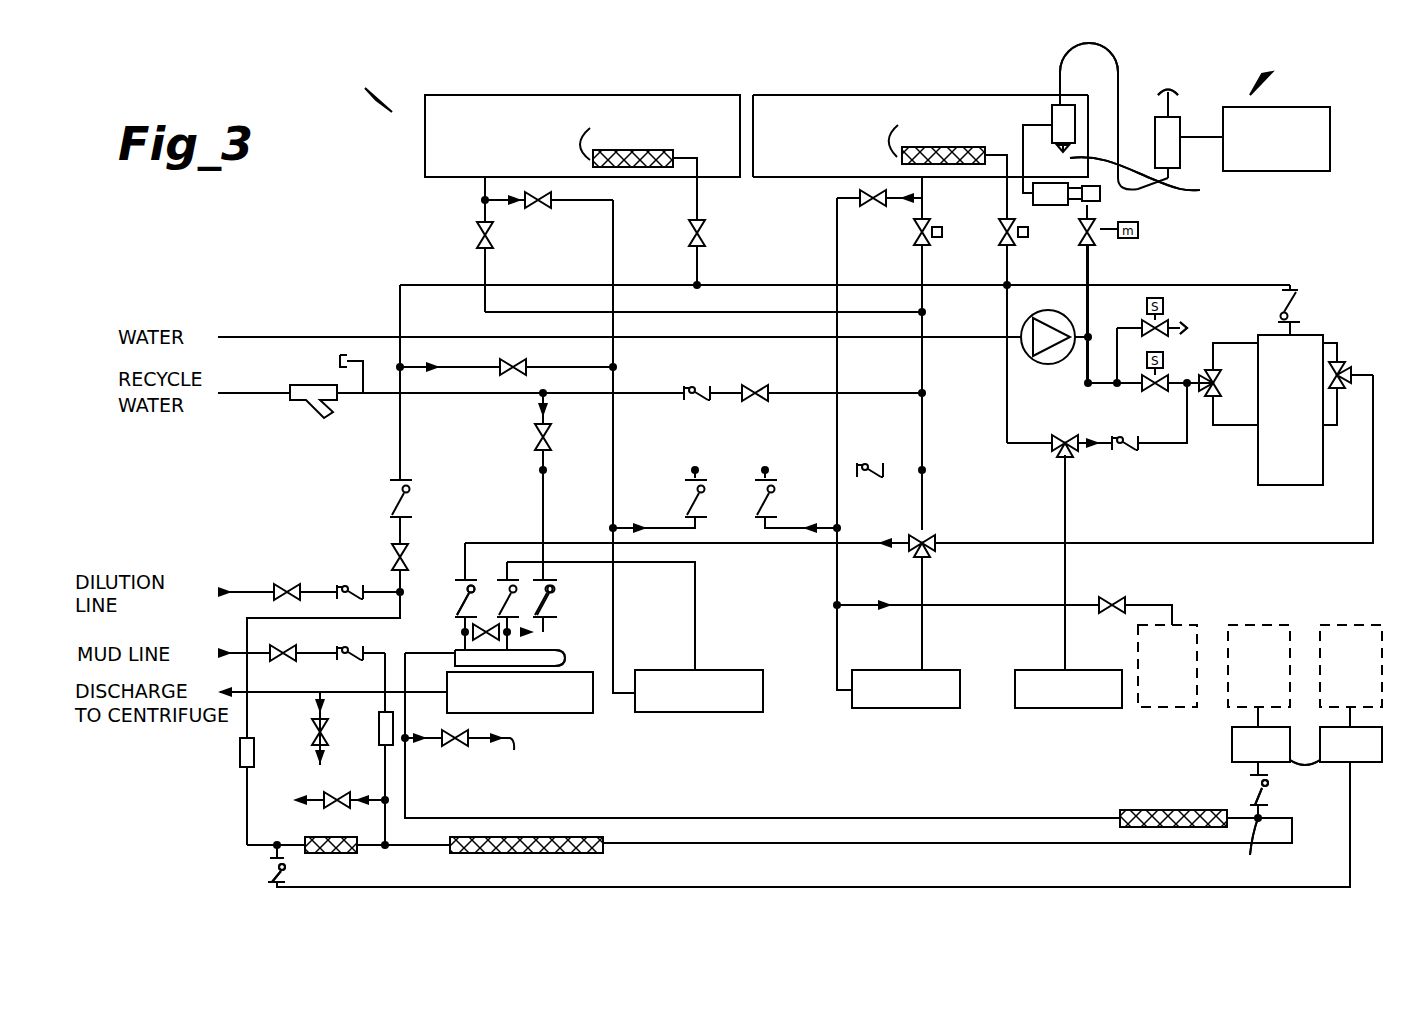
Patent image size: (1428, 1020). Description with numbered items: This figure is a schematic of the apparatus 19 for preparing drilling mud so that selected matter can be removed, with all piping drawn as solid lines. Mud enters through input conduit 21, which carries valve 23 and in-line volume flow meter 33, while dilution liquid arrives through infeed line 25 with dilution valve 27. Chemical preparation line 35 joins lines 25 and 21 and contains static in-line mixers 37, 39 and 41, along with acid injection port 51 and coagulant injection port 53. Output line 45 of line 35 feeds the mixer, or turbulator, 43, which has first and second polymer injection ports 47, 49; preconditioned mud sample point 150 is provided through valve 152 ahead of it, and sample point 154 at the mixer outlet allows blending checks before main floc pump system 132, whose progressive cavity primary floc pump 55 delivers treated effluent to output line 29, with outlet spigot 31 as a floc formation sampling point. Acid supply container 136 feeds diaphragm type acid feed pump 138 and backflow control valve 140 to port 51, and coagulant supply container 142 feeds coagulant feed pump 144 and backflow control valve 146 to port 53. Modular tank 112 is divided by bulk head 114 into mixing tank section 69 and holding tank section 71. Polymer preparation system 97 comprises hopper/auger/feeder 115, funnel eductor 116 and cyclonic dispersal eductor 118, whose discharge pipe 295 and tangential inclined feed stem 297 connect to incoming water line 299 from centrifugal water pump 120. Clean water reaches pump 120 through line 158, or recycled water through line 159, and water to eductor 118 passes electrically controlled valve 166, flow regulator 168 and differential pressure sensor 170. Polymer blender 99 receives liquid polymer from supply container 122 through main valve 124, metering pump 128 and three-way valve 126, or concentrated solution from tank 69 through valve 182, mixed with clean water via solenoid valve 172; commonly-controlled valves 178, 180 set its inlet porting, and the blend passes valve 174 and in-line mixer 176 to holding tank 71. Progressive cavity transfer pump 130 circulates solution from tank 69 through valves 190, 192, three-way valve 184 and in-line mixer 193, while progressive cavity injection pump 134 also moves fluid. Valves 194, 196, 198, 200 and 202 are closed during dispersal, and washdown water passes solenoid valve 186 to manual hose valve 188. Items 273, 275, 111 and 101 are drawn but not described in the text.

The apparatus 19 is at (372, 95).
The holding tank section 71 is at (490, 84).
The bulk head 114 is at (748, 96).
The mixing tank section 69 is at (758, 100).
The modular tank 112 is at (886, 100).
The cyclonic dispersal eductor 118 is at (1058, 103).
The vent line 275 is at (1112, 72).
The funnel eductor 116 is at (1156, 130).
The vent 273 is at (1183, 125).
The polymer preparation system 97 is at (1265, 80).
The hopper/auger/feeder 115 is at (1290, 106).
The in-line mixer 176 is at (632, 150).
The tangential inclined feed stem 297 is at (1050, 130).
The incoming water line 299 is at (1023, 136).
The in-line mixer 193 is at (900, 156).
The discharge pipe 295 is at (1198, 190).
The valve 200 is at (542, 208).
The valve 174 is at (712, 232).
The valve 192 is at (926, 222).
The valve 182 is at (873, 207).
The valve 190 is at (1000, 222).
The flow regulator 168 is at (1052, 205).
The differential pressure sensor 170 is at (1100, 195).
The valve 198 is at (489, 243).
The electrically controlled valve 166 is at (1092, 240).
The centrifugal water pump 120 is at (1068, 318).
The solenoid valve 186 is at (1163, 322).
The manual hose valve 188 is at (1203, 327).
The polymer blender 99 is at (1298, 336).
The commonly-controlled valve 180 is at (1348, 368).
The line 158 is at (686, 340).
The valve 196 is at (527, 366).
The line 159 is at (435, 394).
The valve 194 is at (758, 400).
The valve 202 is at (551, 438).
The solenoid valve 172 is at (1162, 392).
The three-way valve 184 is at (1062, 432).
The commonly-controlled valve 178 is at (1208, 398).
The three-way valve 126 is at (916, 538).
The infeed line 25 is at (262, 570).
The dilution valve 27 is at (289, 585).
The main valve 124 is at (1105, 598).
The liquid polymer supply container 122 is at (1176, 624).
The coagulant supply container 142 is at (1257, 624).
The acid supply container 136 is at (1348, 624).
The input conduit 21 is at (247, 650).
The first polymer injection port 47 is at (460, 648).
The second polymer injection port 49 is at (540, 650).
The mixer 43 is at (563, 656).
The valve 23 is at (272, 658).
The sample point 154 is at (563, 668).
The primary floc pump 55 is at (531, 712).
The main floc pump system 132 is at (582, 714).
The injection pump 134 is at (719, 712).
The metering pump 128 is at (895, 708).
The transfer pump 130 is at (1066, 708).
The output line 29 is at (345, 728).
The outlet spigot 31 is at (311, 735).
The in-line volume flow meter 33 is at (395, 732).
The valve 152 is at (460, 748).
The preconditioned mud sample point 150 is at (463, 759).
The valve 111 is at (340, 770).
The output line 45 is at (407, 790).
The coagulant feed pump 144 is at (1232, 744).
The connection 101 is at (1306, 779).
The acid feed pump 138 is at (1360, 762).
The chemical preparation line 35 is at (832, 843).
The static in-line mixer 41 is at (1120, 812).
The backflow control valve 146 is at (1265, 790).
The static in-line mixer 37 is at (306, 838).
The acid injection port 51 is at (272, 848).
The static in-line mixer 39 is at (604, 850).
The coagulant injection port 53 is at (1267, 846).
The backflow control valve 140 is at (288, 882).